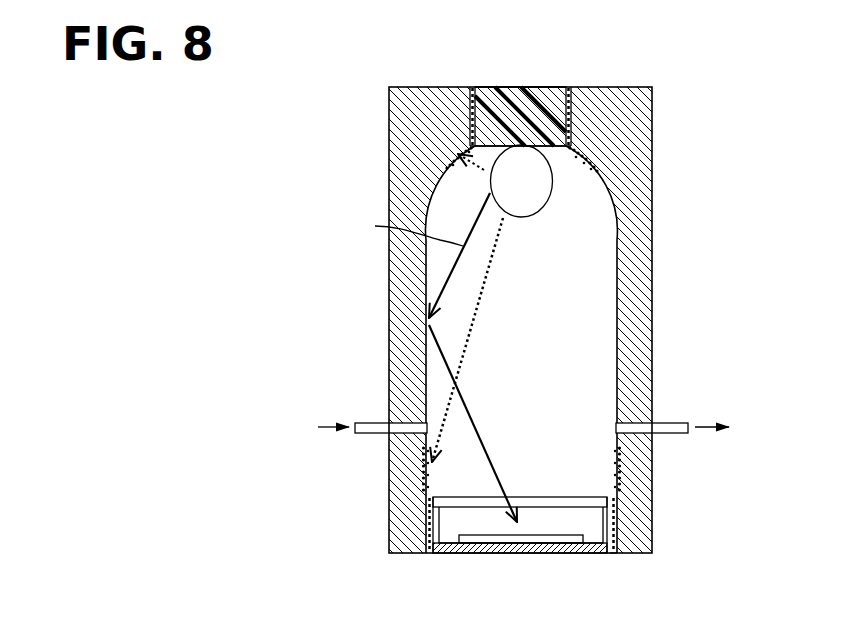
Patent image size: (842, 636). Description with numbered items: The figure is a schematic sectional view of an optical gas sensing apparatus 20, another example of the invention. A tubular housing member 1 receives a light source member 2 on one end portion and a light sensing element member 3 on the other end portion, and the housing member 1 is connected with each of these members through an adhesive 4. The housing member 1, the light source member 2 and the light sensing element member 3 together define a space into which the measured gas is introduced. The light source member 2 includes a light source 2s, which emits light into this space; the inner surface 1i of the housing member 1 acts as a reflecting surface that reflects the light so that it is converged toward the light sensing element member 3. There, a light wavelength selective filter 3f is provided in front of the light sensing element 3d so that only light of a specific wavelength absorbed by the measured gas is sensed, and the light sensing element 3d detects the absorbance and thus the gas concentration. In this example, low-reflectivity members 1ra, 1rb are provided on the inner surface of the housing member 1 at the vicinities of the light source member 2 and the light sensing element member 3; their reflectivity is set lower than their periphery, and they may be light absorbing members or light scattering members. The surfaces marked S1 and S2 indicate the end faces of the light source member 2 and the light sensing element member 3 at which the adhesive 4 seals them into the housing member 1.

The optical gas sensing apparatus 20 is at (359, 76).
The housing member 1 is at (640, 366).
The inner surface of housing 1i is at (616, 283).
The low-reflectivity member 1ra is at (455, 148).
The low-reflectivity member 1rb is at (423, 480).
The light source member 2 is at (528, 105).
The light source 2s is at (517, 172).
The first surface S1 is at (570, 85).
The second surface S2 is at (615, 558).
The adhesive 4 is at (575, 112).
The light sensing element member 3 is at (566, 545).
The light wavelength selective filter 3f is at (485, 500).
The light sensing element 3d is at (525, 538).